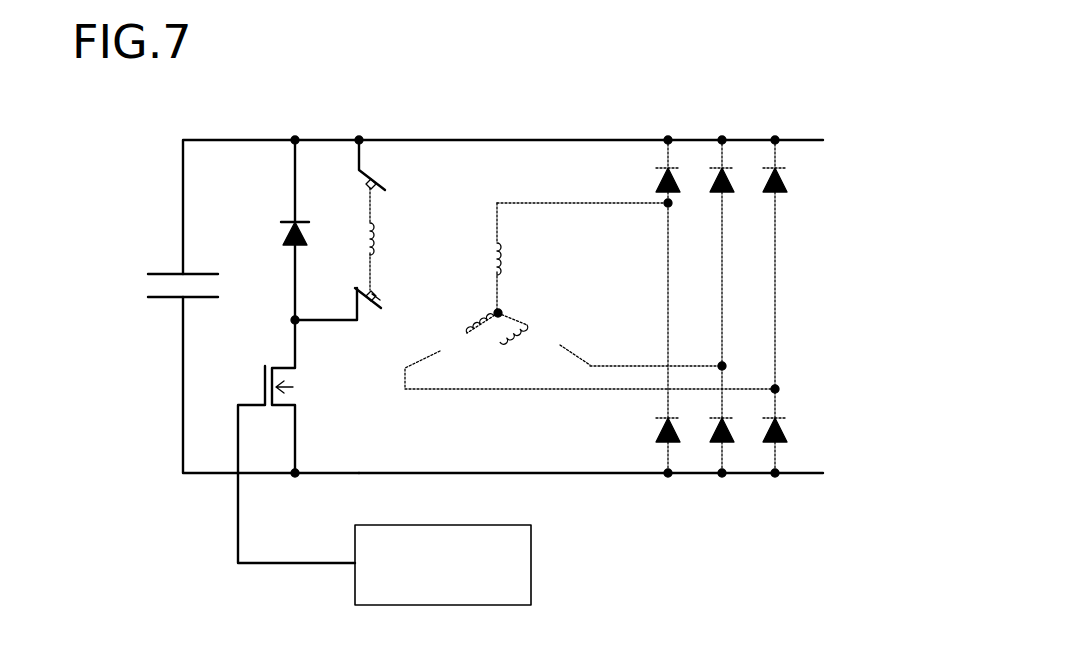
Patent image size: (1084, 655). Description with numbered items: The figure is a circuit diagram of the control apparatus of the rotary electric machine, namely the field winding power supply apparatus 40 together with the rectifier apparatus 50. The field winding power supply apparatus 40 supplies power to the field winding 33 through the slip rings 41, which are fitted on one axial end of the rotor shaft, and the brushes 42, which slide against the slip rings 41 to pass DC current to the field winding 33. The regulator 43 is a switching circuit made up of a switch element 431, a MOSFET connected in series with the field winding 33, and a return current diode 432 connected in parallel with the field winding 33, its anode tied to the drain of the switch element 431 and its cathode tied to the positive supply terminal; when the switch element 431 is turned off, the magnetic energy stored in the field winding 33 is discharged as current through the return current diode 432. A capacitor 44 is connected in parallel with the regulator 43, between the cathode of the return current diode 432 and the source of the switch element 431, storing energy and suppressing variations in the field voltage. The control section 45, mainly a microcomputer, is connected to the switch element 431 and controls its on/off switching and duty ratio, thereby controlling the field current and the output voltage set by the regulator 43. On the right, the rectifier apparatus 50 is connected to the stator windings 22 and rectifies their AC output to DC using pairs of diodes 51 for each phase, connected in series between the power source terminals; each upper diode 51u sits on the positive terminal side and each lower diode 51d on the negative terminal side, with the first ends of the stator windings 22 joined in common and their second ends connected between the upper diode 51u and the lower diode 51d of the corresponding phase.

The field winding power supply apparatus 40 is at (212, 507).
The regulator 43 is at (272, 282).
The switch element 431 is at (263, 381).
The return current diode 432 is at (292, 221).
The capacitor 44 is at (163, 272).
The slip rings 41 is at (366, 183).
The brushes 42 is at (382, 184).
The field winding 33 is at (378, 230).
The stator windings 22 is at (500, 246).
The control section 45 is at (531, 541).
The rectifier apparatus 50 is at (800, 250).
The diodes 51 is at (782, 86).
The upper diode 51u is at (764, 168).
The lower diode 51d is at (798, 498).